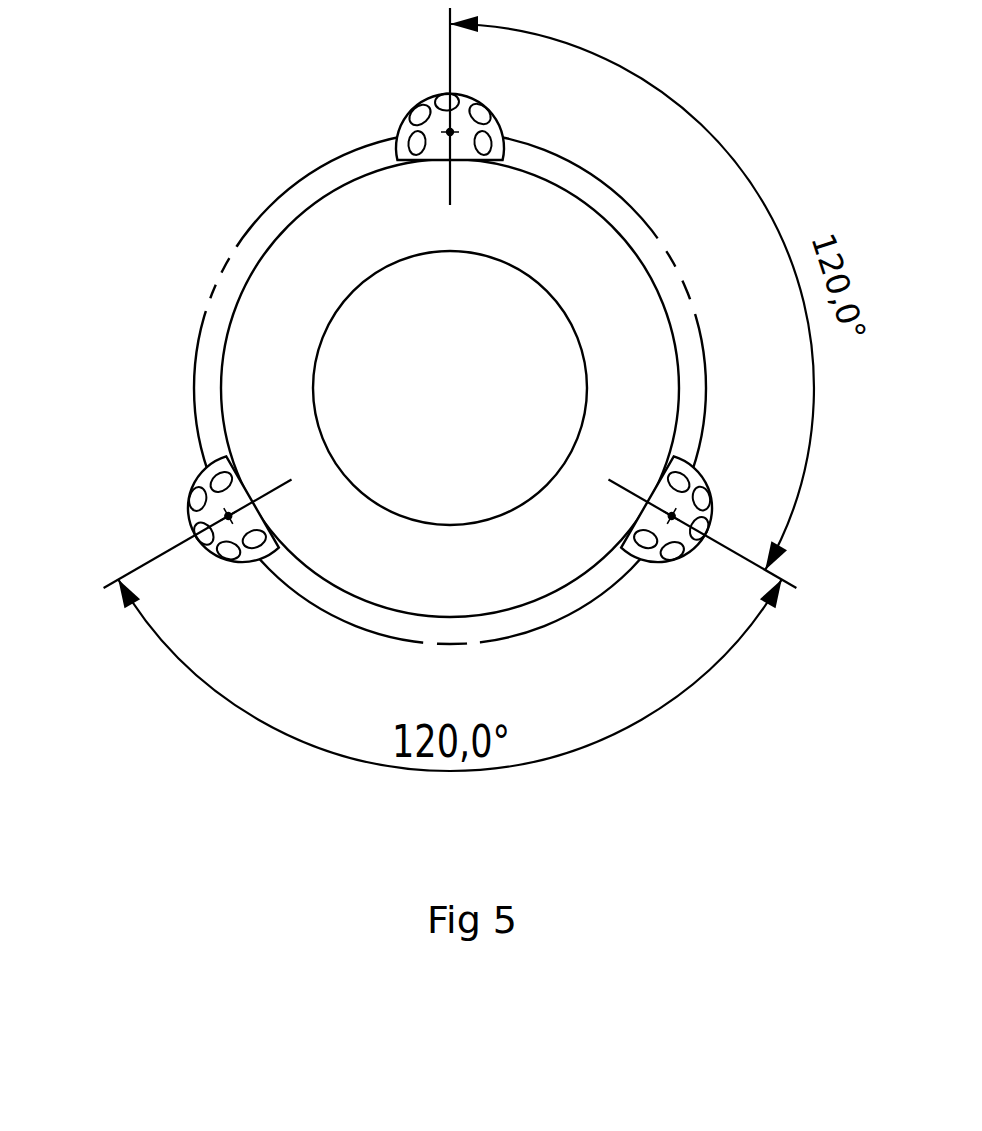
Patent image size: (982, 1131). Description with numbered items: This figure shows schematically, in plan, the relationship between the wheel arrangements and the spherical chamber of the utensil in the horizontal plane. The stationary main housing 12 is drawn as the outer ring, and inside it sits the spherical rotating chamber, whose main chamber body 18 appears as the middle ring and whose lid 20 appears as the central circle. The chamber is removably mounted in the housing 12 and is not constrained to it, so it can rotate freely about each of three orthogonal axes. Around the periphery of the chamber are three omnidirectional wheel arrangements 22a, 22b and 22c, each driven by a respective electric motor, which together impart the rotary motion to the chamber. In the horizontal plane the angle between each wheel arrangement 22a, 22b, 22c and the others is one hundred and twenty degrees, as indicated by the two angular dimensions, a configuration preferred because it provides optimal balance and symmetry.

The main housing 12 is at (693, 388).
The main chamber body 18 is at (272, 335).
The lid 20 is at (433, 288).
The omnidirectional wheel arrangement 22a is at (727, 522).
The omnidirectional wheel arrangement 22b is at (172, 508).
The omnidirectional wheel arrangement 22c is at (408, 93).